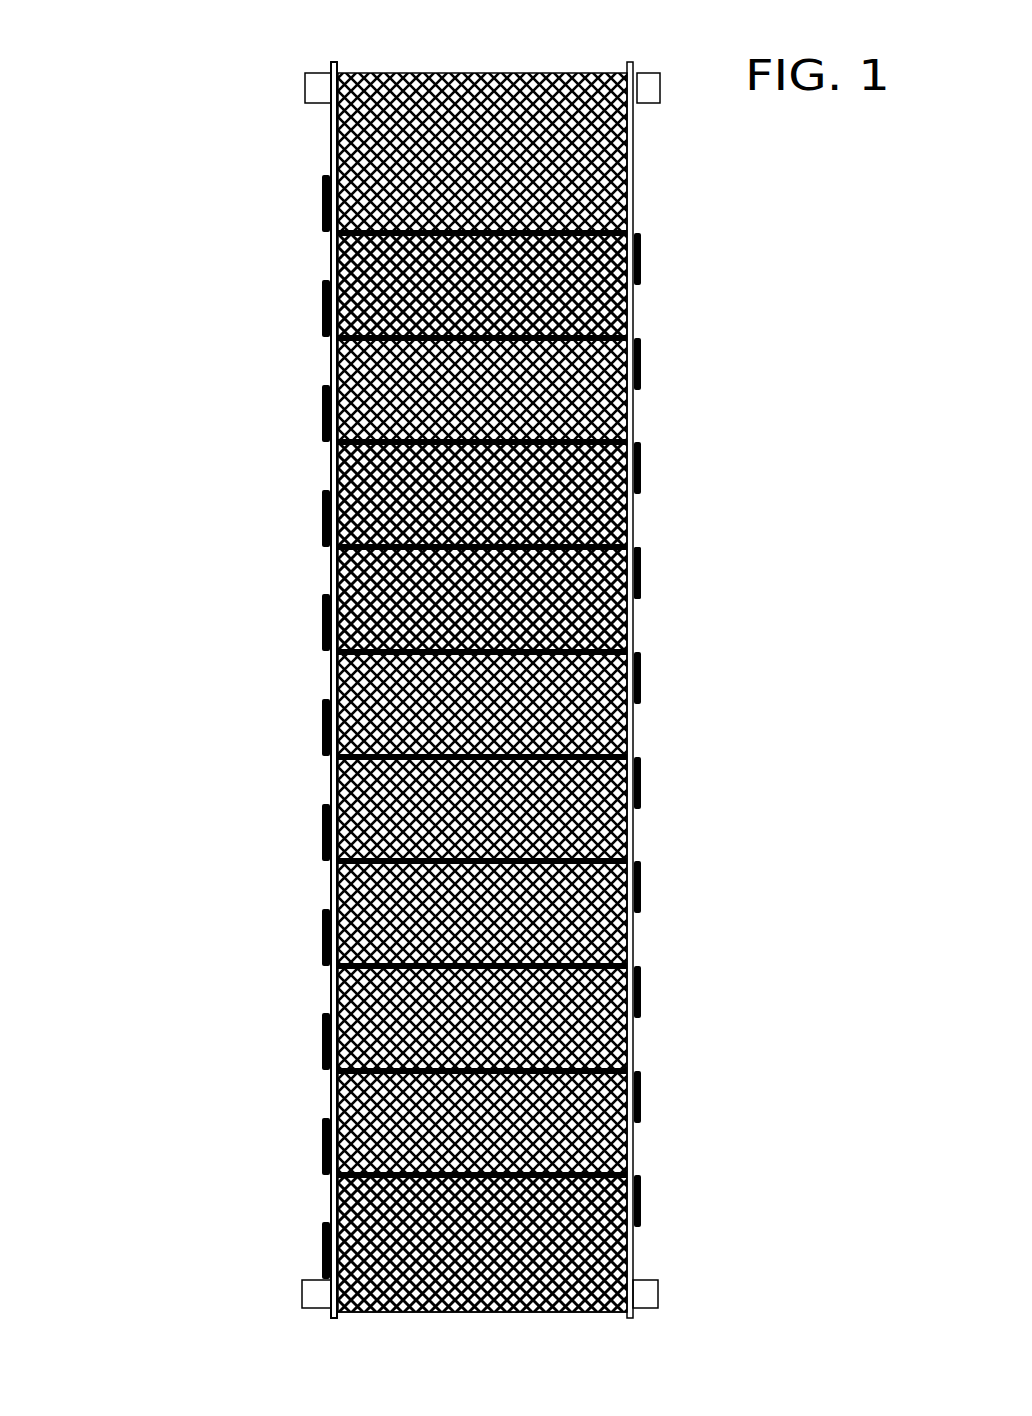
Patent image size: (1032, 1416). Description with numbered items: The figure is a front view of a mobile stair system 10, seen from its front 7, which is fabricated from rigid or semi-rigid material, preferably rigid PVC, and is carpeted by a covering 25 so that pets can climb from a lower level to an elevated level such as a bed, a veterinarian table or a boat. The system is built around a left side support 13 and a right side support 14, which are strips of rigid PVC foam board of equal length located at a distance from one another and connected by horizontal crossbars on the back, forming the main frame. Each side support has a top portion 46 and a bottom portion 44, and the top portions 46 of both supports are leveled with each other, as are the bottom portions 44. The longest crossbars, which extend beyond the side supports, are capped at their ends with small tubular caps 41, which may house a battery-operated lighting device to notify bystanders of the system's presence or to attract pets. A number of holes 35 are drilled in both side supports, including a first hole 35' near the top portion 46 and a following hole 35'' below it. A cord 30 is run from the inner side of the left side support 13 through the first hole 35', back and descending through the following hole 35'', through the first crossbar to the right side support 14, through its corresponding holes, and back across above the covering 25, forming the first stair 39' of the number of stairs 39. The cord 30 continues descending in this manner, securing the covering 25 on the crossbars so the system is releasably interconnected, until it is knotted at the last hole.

The mobile stair system 10 is at (282, 372).
The front 7 is at (331, 485).
The left side support 13 is at (331, 782).
The right side support 14 is at (634, 732).
The covering 25 is at (522, 1313).
The cord 30 is at (637, 578).
The number of holes 35 is at (582, 756).
The first hole 35' is at (464, 211).
The following hole 35'' is at (471, 277).
The number of stairs 39 is at (342, 613).
The first stair 39' is at (599, 298).
The tubular caps 41 is at (305, 83).
The bottom portion 44 is at (331, 1100).
The top portion 46 is at (331, 130).